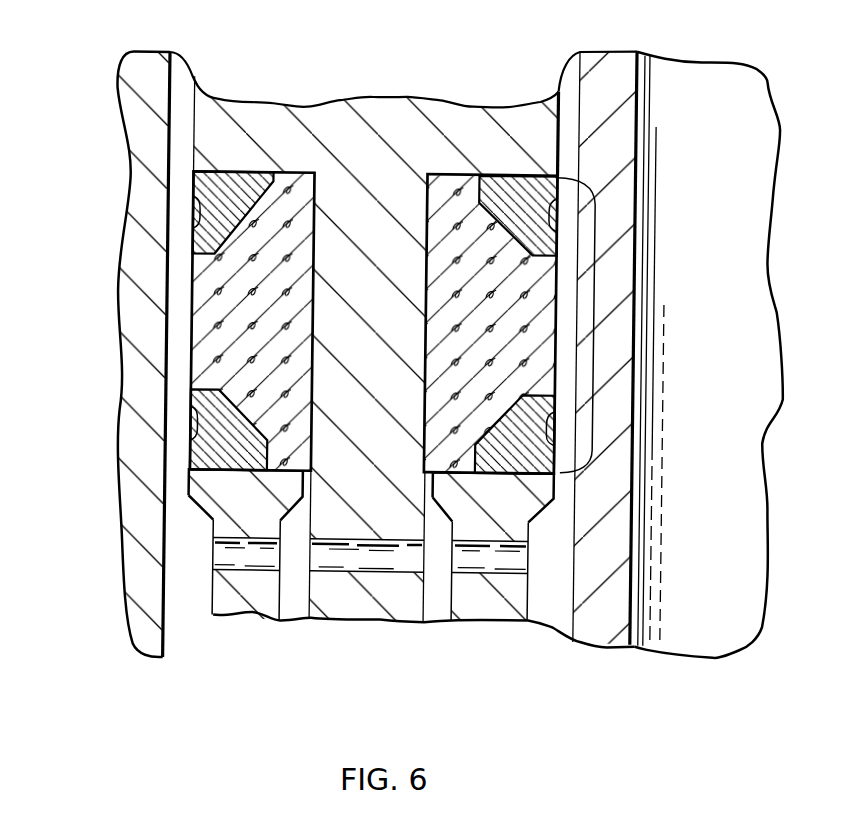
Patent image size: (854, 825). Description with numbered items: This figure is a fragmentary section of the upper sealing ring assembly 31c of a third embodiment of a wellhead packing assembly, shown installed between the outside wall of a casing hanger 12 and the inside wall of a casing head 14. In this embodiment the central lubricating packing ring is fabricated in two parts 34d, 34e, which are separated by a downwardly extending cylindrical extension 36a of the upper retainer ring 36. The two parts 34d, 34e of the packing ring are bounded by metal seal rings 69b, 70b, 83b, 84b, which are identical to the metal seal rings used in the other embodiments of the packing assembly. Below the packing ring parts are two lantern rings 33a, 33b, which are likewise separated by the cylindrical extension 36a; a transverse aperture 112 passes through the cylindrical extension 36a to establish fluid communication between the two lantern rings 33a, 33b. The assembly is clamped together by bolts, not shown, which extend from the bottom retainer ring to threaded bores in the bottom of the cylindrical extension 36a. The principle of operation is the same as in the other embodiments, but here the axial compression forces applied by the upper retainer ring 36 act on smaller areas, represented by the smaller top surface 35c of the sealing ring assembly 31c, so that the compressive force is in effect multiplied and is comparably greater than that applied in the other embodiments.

The casing hanger 12 is at (617, 228).
The casing head 14 is at (135, 250).
The sealing ring assembly 31c is at (597, 330).
The lantern ring 33a is at (210, 505).
The lantern ring 33b is at (523, 505).
The lubricating packing ring part 34d is at (520, 293).
The lubricating packing ring part 34e is at (218, 338).
The top surface 35c is at (424, 172).
The upper retainer ring 36 is at (326, 117).
The cylindrical extension 36a is at (362, 597).
The metal seal ring 69b is at (512, 196).
The metal seal ring 70b is at (527, 455).
The metal seal ring 83b is at (212, 172).
The metal seal ring 84b is at (203, 452).
The transverse aperture 112 is at (337, 558).